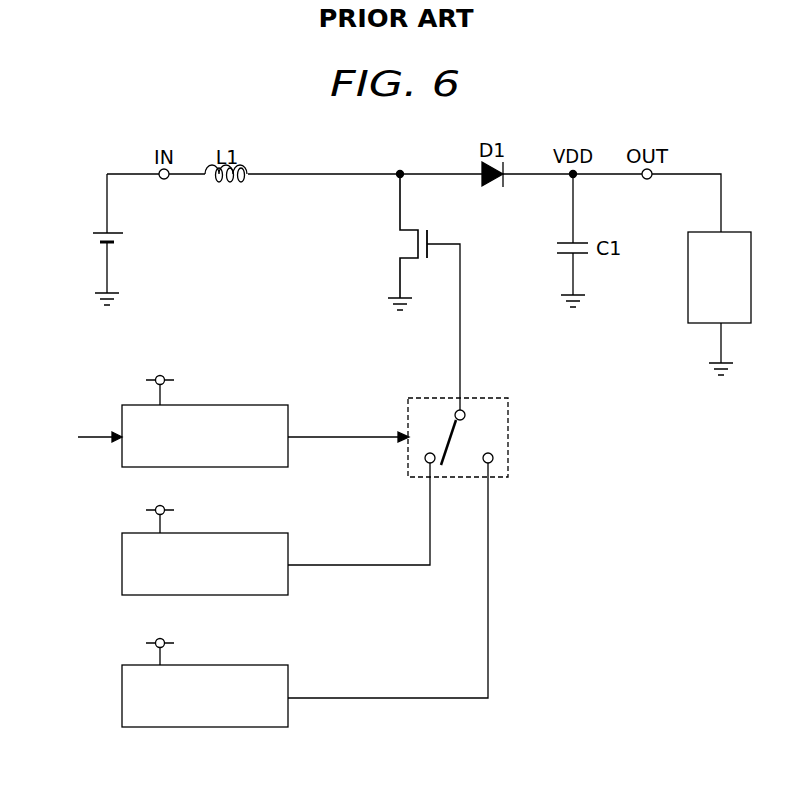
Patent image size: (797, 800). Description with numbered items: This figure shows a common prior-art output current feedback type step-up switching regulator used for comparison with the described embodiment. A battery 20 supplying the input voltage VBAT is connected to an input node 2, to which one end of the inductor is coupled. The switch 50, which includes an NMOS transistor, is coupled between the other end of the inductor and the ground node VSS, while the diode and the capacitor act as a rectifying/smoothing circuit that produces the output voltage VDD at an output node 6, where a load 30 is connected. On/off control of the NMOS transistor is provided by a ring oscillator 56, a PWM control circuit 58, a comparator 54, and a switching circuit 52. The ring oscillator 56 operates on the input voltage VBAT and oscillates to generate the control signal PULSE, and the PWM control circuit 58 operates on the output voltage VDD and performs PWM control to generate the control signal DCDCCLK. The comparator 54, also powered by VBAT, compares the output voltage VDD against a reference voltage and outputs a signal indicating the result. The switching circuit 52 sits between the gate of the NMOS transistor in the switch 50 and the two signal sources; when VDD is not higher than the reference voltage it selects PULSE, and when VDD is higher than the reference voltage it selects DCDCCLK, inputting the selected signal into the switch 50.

The input node 2 is at (164, 180).
The output terminal OUT 6 is at (647, 180).
The battery VBAT 20 is at (100, 230).
The load 30 is at (688, 284).
The switch 50 is at (407, 244).
The switching circuit 52 is at (509, 435).
The comparator 54 is at (259, 468).
The ring oscillator 56 is at (259, 596).
The PWM control circuit 58 is at (259, 728).